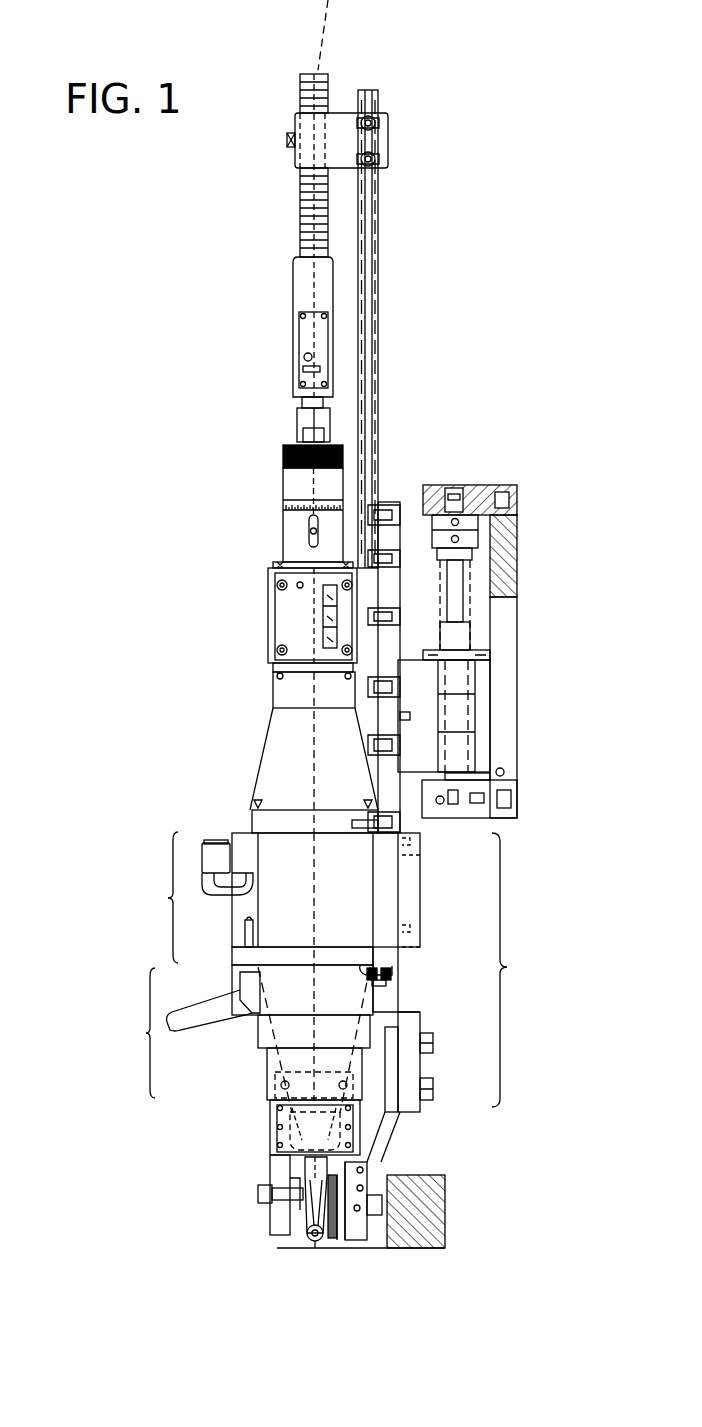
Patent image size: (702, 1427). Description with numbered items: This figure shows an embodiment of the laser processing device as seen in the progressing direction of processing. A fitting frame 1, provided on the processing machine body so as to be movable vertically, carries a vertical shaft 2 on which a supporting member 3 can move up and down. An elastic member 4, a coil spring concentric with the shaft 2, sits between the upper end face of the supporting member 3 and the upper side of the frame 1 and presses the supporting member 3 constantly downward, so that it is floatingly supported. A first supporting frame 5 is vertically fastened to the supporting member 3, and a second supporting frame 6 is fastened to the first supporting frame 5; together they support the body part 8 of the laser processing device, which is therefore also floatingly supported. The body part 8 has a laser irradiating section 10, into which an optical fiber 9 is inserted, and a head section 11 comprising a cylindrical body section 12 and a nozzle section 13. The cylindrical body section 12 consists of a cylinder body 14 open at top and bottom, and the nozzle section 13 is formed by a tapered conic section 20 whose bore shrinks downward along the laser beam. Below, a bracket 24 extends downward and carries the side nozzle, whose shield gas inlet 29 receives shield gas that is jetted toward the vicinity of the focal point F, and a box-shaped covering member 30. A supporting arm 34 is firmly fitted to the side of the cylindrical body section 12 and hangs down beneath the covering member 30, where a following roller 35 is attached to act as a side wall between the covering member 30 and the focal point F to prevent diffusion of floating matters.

The fitting frame 1 is at (517, 525).
The shaft 2 is at (457, 617).
The supporting member 3 is at (480, 722).
The elastic member 4 is at (477, 633).
The first supporting frame 5 is at (390, 502).
The second supporting frame 6 is at (378, 365).
The body part 8 is at (258, 620).
The optical fiber 9 is at (318, 70).
The laser irradiating section 10 is at (262, 514).
The head section 11 is at (518, 970).
The cylindrical body section 12 is at (193, 897).
The nozzle section 13 is at (182, 1033).
The cylinder body 14 is at (348, 880).
The conic section 20 is at (347, 997).
The bracket 24 is at (278, 1223).
The shield gas inlet 29 is at (303, 1238).
The covering member 30 is at (270, 1133).
The supporting arm 34 is at (383, 1133).
The following roller 35 is at (343, 1243).
The focal point F is at (315, 1243).